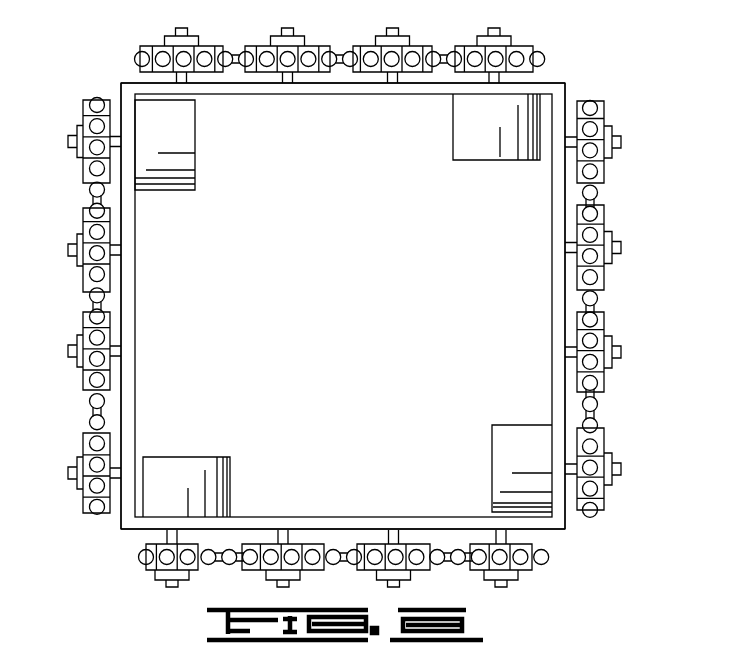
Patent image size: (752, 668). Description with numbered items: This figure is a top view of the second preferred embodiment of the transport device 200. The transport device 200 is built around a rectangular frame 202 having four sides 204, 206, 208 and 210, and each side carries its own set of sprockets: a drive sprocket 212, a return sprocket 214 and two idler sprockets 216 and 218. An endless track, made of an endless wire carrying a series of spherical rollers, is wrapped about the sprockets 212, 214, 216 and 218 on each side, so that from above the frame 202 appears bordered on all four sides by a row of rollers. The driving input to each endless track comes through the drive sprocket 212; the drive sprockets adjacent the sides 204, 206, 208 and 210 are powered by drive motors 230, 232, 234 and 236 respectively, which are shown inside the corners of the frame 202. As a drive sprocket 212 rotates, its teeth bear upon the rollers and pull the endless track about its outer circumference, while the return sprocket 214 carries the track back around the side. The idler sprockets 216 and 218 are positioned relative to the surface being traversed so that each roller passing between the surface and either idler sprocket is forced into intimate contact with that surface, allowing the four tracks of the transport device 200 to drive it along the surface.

The transport device 200 is at (605, 39).
The rectangular frame 202 is at (567, 87).
The side 204 is at (552, 83).
The side 206 is at (570, 524).
The side 208 is at (128, 533).
The side 210 is at (119, 91).
The drive sprocket 212 is at (522, 47).
The return sprocket 214 is at (153, 48).
The idler sprocket 216 is at (265, 46).
The idler sprocket 218 is at (362, 47).
The drive motor 230 is at (490, 162).
The drive motor 232 is at (490, 450).
The drive motor 234 is at (190, 457).
The drive motor 236 is at (197, 175).